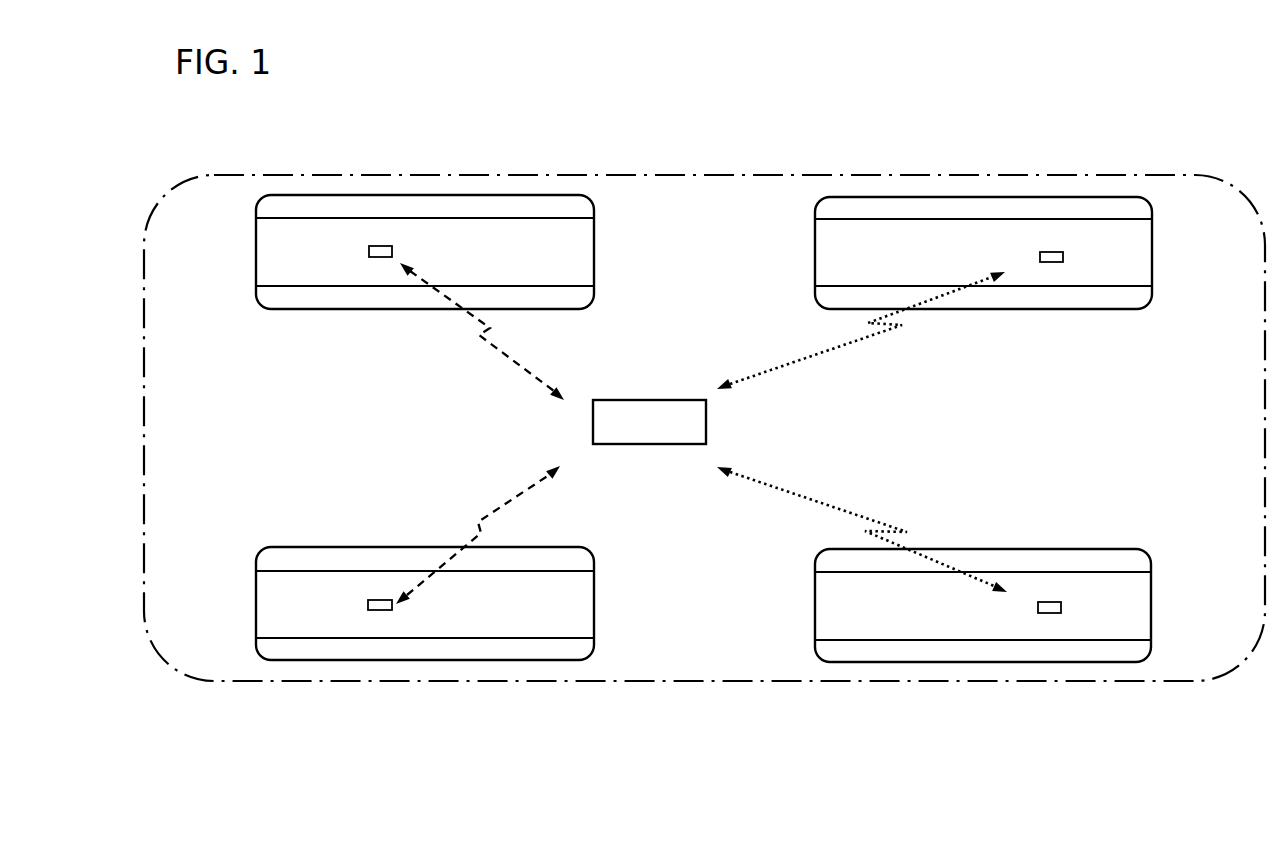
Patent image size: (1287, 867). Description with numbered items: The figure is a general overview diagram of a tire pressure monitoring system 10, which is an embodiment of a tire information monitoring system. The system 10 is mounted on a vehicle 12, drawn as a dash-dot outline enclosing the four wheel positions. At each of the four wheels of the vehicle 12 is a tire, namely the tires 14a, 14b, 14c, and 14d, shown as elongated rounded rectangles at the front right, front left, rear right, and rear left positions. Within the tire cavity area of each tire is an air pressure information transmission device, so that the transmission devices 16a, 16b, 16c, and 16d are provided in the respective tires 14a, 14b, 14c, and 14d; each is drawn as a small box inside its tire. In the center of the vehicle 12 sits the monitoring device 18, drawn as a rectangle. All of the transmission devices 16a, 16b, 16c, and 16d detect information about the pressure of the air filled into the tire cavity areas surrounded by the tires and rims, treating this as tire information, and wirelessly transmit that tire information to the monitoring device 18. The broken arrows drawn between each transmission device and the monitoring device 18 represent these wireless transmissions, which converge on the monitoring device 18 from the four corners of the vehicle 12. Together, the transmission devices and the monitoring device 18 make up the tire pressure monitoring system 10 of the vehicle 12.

The tire pressure monitoring system 10 is at (621, 86).
The vehicle 12 is at (646, 175).
The tire 14a is at (426, 196).
The tire 14b is at (423, 660).
The tire 14c is at (996, 197).
The tire 14d is at (975, 662).
The air pressure information transmission device 16a is at (378, 245).
The air pressure information transmission device 16b is at (382, 612).
The air pressure information transmission device 16c is at (1057, 251).
The air pressure information transmission device 16d is at (1053, 614).
The monitoring device 18 is at (648, 444).